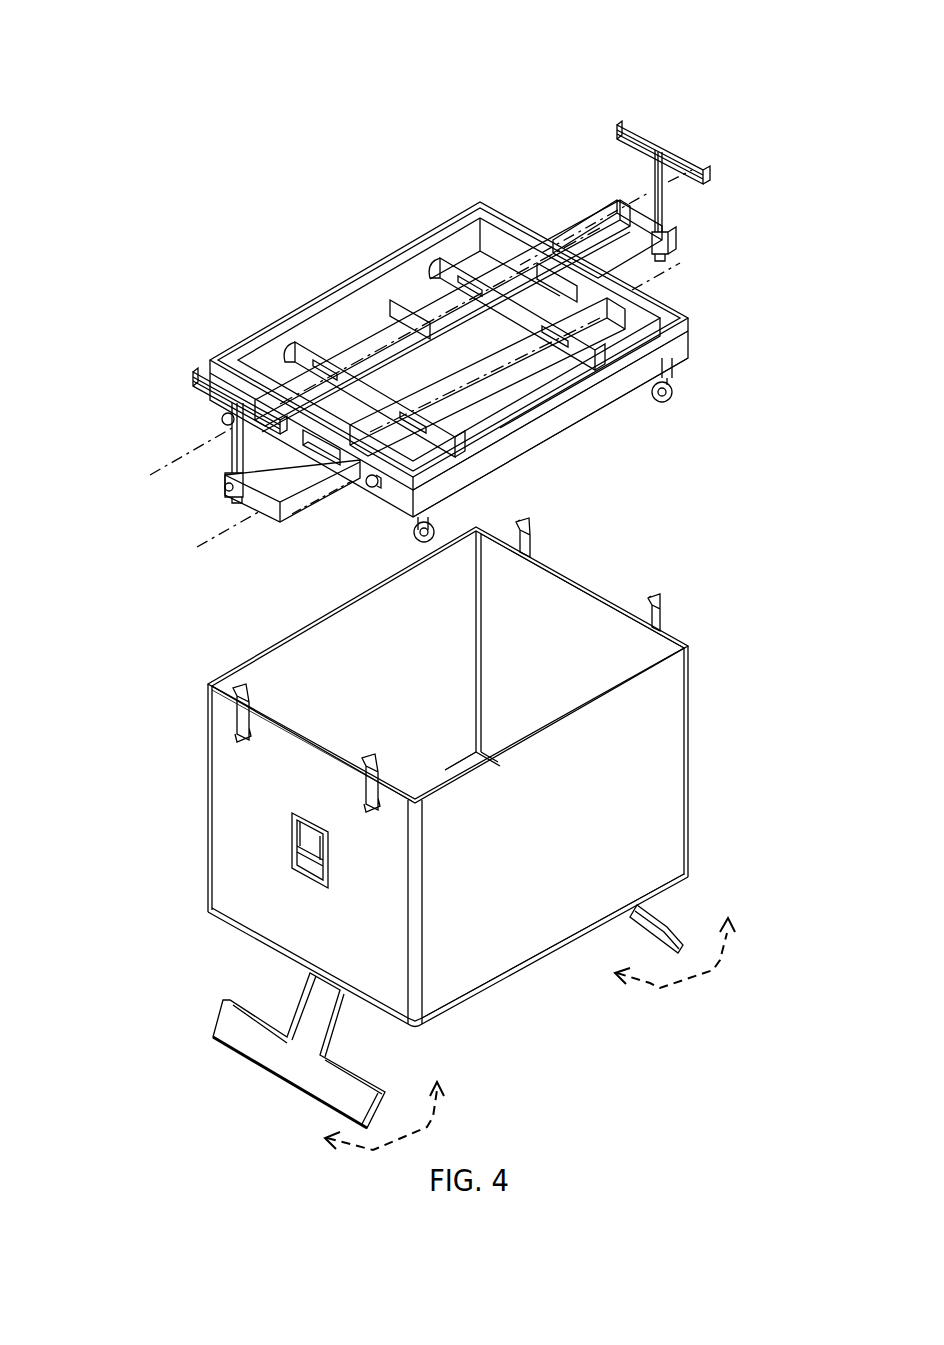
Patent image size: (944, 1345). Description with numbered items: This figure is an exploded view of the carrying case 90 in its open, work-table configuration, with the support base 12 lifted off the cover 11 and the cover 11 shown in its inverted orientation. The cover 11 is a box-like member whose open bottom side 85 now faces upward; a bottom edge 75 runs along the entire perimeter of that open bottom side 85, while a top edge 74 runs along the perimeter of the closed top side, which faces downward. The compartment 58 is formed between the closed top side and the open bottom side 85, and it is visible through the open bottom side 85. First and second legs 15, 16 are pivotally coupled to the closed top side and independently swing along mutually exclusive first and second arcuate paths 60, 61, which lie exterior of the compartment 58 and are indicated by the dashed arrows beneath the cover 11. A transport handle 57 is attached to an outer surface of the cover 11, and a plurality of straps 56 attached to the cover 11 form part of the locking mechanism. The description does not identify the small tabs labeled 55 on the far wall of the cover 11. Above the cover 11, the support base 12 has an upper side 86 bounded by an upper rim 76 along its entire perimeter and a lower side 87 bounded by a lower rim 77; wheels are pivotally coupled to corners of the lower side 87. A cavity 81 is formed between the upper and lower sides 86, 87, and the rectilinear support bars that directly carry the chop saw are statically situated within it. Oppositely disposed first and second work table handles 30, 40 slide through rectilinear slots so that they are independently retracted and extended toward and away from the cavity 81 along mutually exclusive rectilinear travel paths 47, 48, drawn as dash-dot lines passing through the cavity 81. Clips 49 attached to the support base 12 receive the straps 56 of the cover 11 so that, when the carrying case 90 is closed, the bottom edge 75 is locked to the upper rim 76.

The carrying case 90 is at (138, 170).
The upper rim 76 is at (437, 225).
The first work table handle 30 is at (608, 150).
The support base 12 is at (333, 262).
The upper side 86 is at (325, 295).
The cavity 81 is at (435, 365).
The second rectilinear travel path 48 is at (650, 289).
The second work table handle 40 is at (196, 418).
The first rectilinear travel path 47 is at (145, 478).
The clips 49 is at (375, 490).
The lower rim 77 is at (585, 425).
The lower side 87 is at (535, 455).
The rear clip 55 is at (522, 535).
The cover 11 is at (722, 662).
The open bottom side 85 is at (330, 637).
The straps 56 is at (365, 772).
The bottom edge 75 is at (580, 707).
The compartment 58 is at (435, 738).
The transport handle 57 is at (295, 870).
The second leg 16 is at (670, 927).
The first leg 15 is at (240, 1048).
The top edge 74 is at (565, 952).
The second arcuate path 61 is at (655, 985).
The first arcuate path 60 is at (433, 1120).